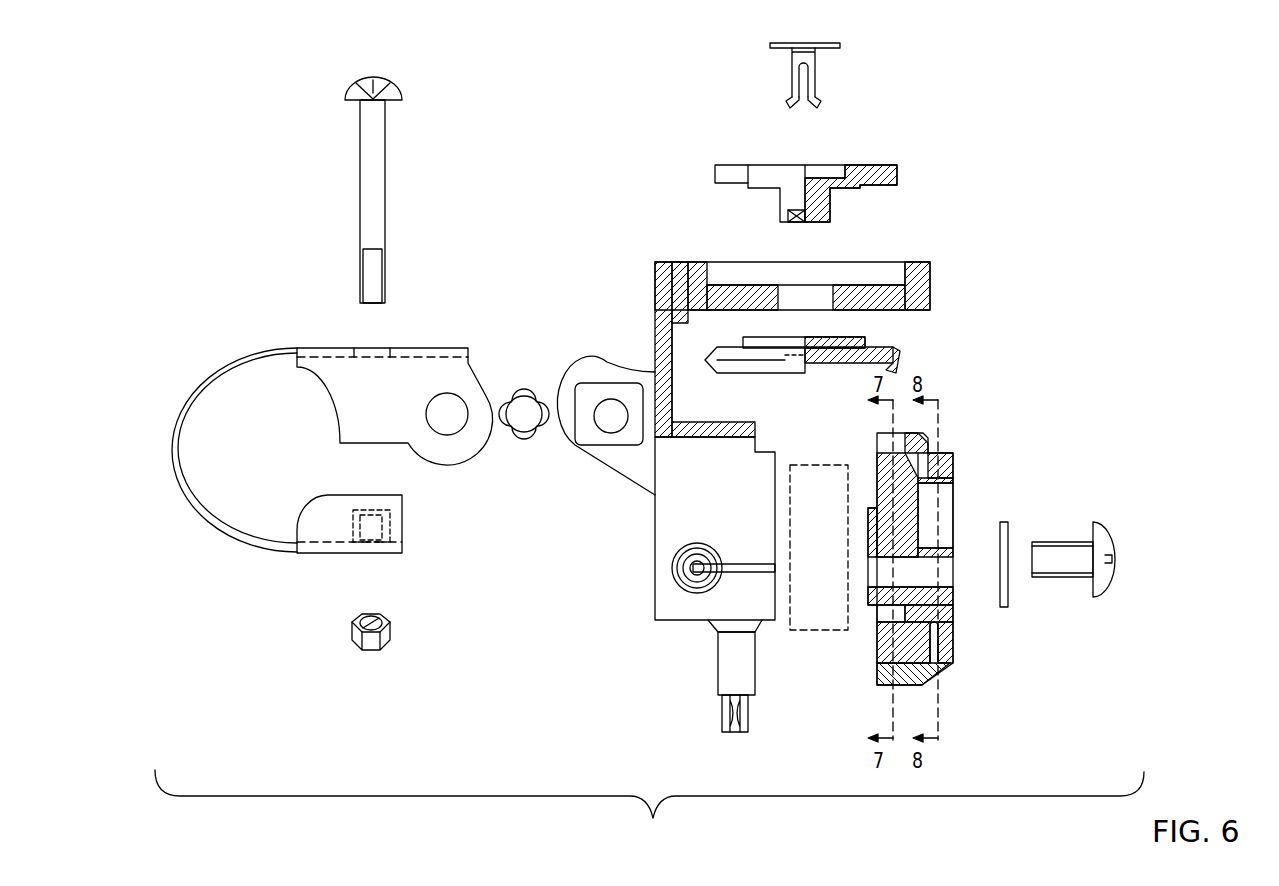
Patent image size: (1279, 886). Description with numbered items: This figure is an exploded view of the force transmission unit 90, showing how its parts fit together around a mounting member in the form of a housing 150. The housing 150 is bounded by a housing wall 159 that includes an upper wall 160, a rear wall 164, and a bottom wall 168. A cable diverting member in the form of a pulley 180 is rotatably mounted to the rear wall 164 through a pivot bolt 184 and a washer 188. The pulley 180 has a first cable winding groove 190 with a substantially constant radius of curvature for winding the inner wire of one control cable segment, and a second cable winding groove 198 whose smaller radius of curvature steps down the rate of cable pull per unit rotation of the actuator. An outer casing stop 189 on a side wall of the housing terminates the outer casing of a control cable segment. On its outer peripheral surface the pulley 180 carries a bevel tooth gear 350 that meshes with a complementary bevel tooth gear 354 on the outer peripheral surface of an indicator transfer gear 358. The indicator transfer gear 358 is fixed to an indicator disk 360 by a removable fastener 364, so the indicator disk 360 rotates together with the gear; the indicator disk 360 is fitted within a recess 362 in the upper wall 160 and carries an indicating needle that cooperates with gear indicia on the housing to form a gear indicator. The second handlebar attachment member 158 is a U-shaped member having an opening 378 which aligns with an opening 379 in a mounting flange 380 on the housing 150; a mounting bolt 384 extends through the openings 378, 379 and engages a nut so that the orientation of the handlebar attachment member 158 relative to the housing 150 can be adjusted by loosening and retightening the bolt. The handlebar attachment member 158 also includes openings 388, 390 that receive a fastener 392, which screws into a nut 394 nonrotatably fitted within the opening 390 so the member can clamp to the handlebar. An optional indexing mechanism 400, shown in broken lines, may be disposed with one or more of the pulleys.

The force transmission unit 90 is at (649, 809).
The housing 150 is at (753, 314).
The second handlebar attachment member 158 is at (238, 350).
The housing wall 159 is at (653, 281).
The upper wall 160 is at (918, 272).
The rear wall 164 is at (655, 322).
The bottom wall 168 is at (682, 622).
The pulley 180 is at (953, 482).
The pivot bolt 184 is at (1110, 580).
The washer 188 is at (1010, 592).
The outer casing stop 189 is at (673, 578).
The first cable winding groove 190 is at (893, 678).
The second cable winding groove 198 is at (935, 661).
The bevel tooth gear 350 is at (928, 442).
The bevel tooth gear 354 is at (900, 368).
The indicator transfer gear 358 is at (865, 340).
The indicator disk 360 is at (872, 165).
The recess 362 is at (727, 272).
The removable fastener 364 is at (842, 47).
The opening 378 is at (449, 419).
The opening 379 is at (604, 400).
The mounting flange 380 is at (605, 455).
The mounting bolt 384 is at (522, 394).
The opening 388 is at (358, 352).
The opening 390 is at (372, 535).
The fastener 392 is at (368, 150).
The nut 394 is at (370, 652).
The indexing mechanism 400 is at (829, 464).